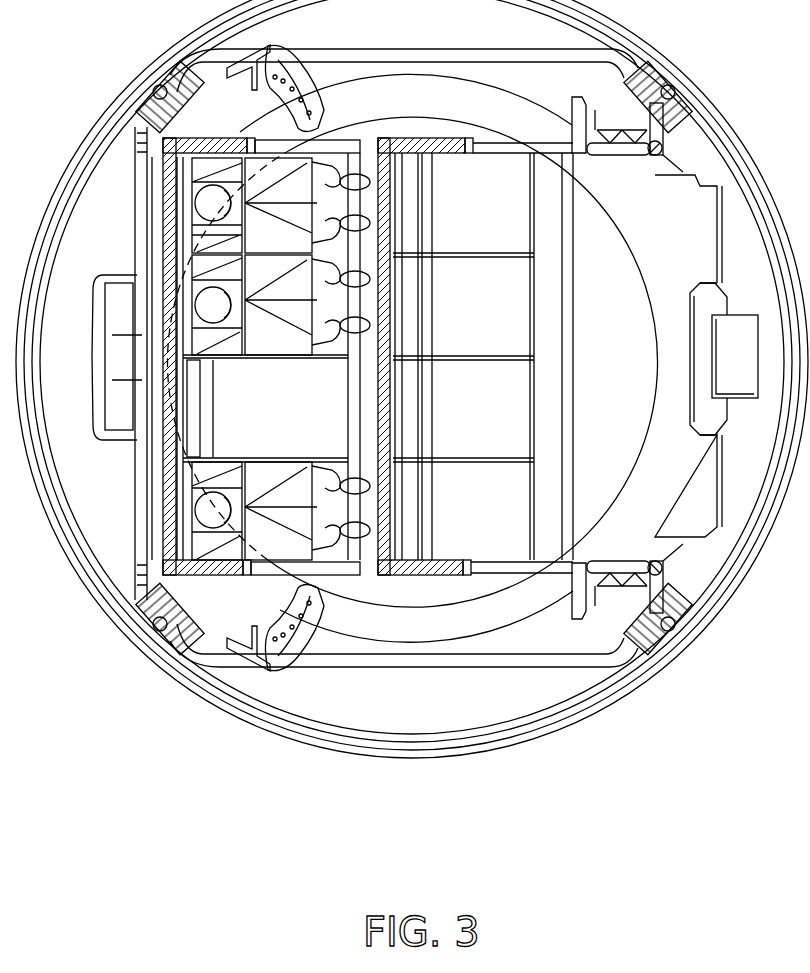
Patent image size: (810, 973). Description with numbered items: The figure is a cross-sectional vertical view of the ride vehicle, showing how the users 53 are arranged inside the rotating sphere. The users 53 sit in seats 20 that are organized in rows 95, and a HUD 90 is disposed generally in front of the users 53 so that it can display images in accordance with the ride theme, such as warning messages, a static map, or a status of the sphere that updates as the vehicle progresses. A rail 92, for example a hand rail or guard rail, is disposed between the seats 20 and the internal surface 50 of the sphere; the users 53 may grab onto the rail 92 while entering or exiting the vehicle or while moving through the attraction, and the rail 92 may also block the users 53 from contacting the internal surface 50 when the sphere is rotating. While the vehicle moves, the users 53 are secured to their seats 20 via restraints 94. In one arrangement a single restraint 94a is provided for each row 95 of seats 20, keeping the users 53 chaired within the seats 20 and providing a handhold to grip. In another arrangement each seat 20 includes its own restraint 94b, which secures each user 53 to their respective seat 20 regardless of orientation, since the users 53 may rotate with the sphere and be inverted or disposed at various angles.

The seat 20 is at (320, 207).
The internal surface 50 is at (758, 205).
The user 53 is at (378, 237).
The HUD 90 is at (745, 342).
The rail 92 is at (514, 50).
The restraint 94 is at (197, 160).
The restraint 94a is at (432, 335).
The restraint 94b is at (330, 253).
The row 95 is at (205, 586).